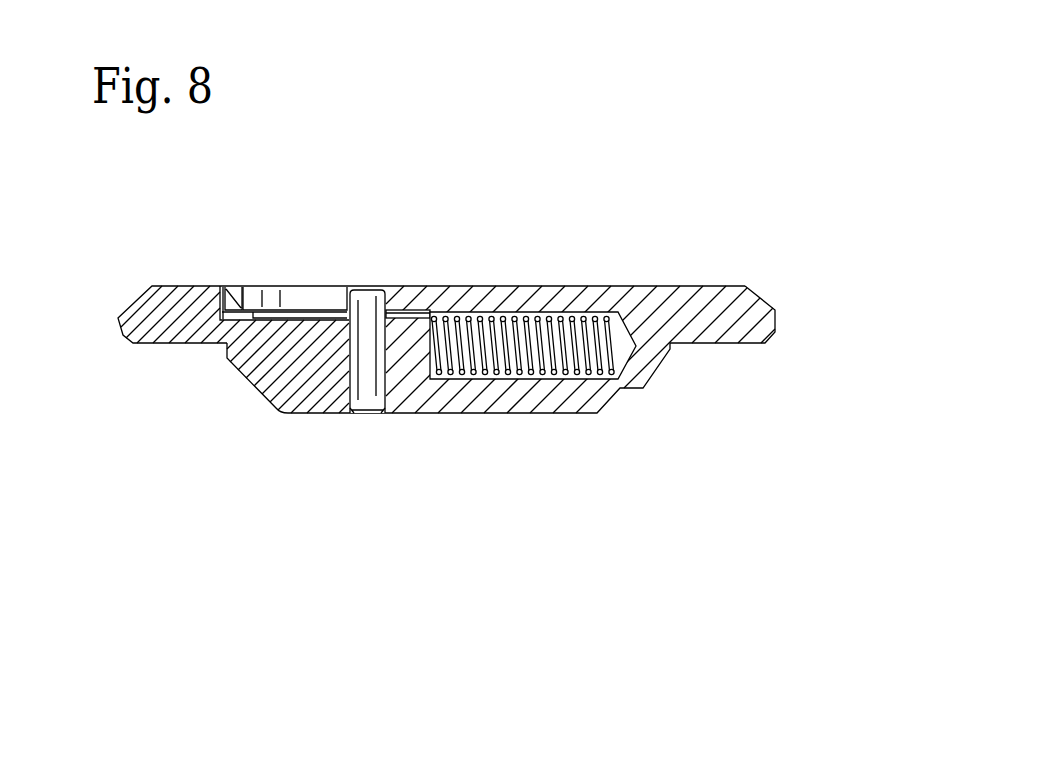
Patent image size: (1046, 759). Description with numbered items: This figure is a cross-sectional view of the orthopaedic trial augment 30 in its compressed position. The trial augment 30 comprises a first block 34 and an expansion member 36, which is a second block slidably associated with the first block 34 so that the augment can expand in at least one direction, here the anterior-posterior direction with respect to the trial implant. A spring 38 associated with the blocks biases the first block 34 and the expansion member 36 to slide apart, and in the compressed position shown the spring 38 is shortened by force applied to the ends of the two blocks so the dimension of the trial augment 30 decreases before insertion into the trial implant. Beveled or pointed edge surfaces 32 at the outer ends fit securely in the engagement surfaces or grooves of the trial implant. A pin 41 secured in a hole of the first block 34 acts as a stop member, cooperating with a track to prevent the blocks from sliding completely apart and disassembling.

The orthopaedic trial augment 30 is at (650, 495).
The edge surfaces 32 is at (118, 318).
The first block 34 is at (332, 413).
The expansion member 36 is at (638, 286).
The spring 38 is at (548, 316).
The pin 41 is at (370, 289).